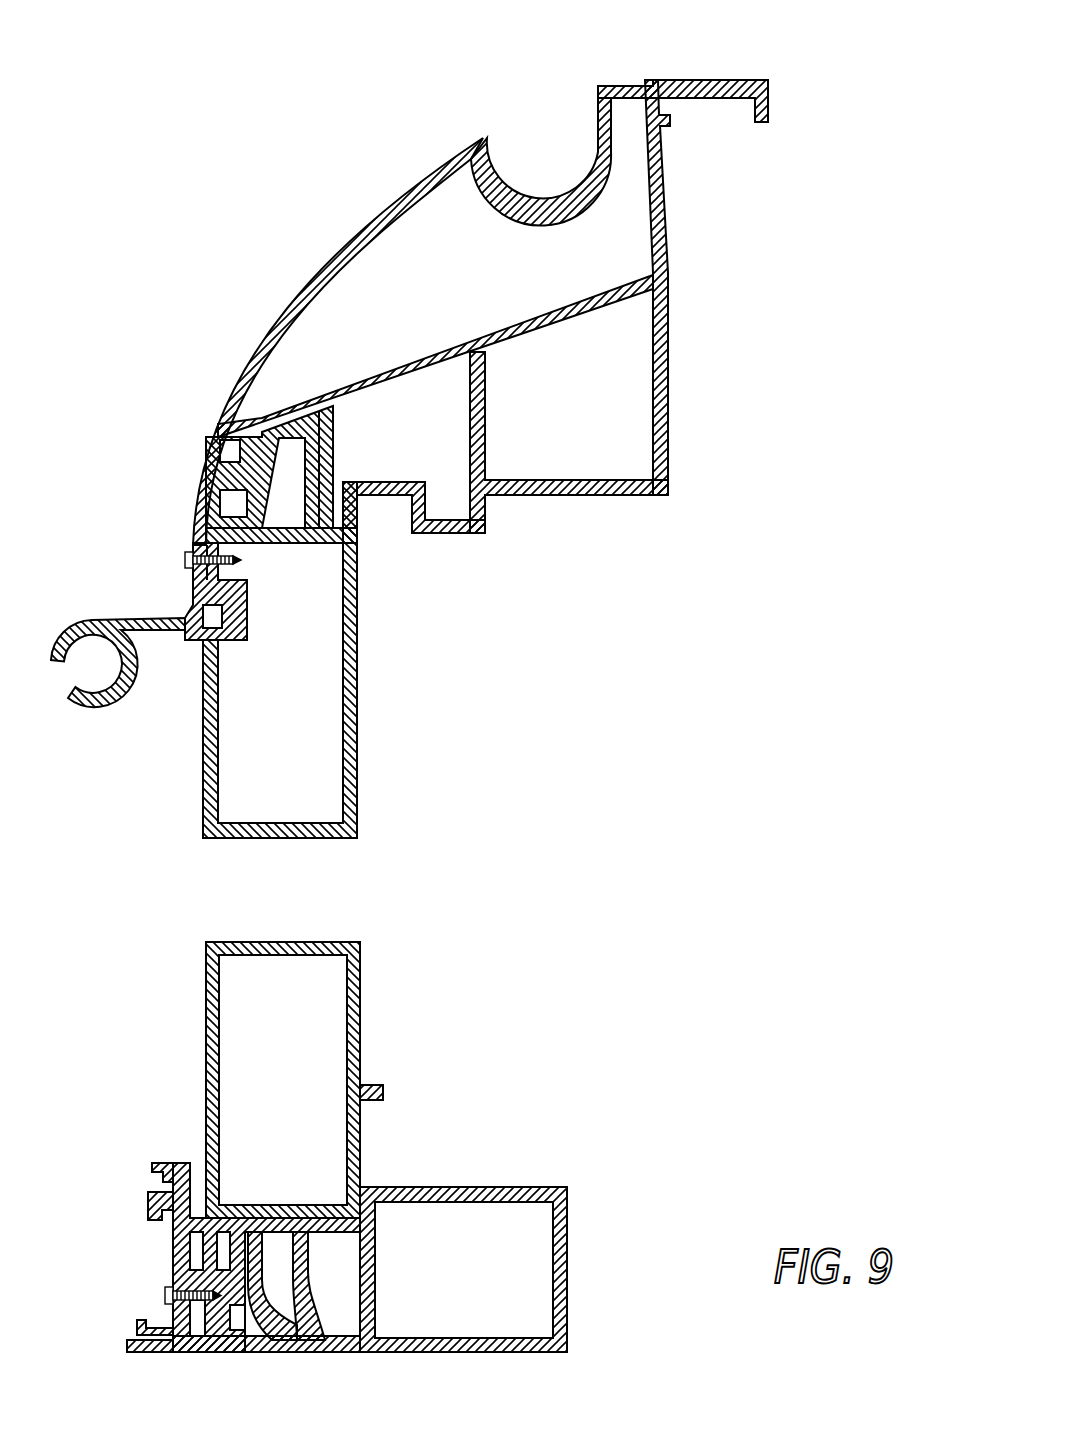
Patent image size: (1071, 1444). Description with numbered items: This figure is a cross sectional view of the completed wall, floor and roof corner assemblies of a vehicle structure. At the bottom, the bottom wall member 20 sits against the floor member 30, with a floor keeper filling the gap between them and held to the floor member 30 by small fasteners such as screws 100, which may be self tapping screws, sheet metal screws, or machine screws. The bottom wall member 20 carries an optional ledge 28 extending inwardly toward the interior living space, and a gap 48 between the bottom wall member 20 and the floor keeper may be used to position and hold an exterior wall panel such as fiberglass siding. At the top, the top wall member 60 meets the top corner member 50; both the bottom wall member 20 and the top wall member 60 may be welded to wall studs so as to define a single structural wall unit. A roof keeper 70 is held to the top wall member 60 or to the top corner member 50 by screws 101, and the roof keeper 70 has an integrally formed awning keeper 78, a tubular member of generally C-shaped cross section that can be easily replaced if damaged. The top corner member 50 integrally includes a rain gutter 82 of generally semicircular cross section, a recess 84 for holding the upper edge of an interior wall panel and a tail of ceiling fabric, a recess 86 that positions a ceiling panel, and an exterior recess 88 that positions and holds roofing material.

The bottom wall member 20 is at (218, 1017).
The ledge 28 is at (367, 1083).
The floor member 30 is at (505, 1187).
The gap 48 is at (198, 1173).
The top corner member 50 is at (668, 277).
The top wall member 60 is at (358, 765).
The roof keeper 70 is at (194, 511).
The awning keeper 78 is at (119, 697).
The rain gutter 82 is at (492, 178).
The recess 84 is at (383, 497).
The recess 86 is at (562, 497).
The exterior recess 88 is at (697, 86).
The screws 100 is at (165, 1296).
The screws 101 is at (185, 559).